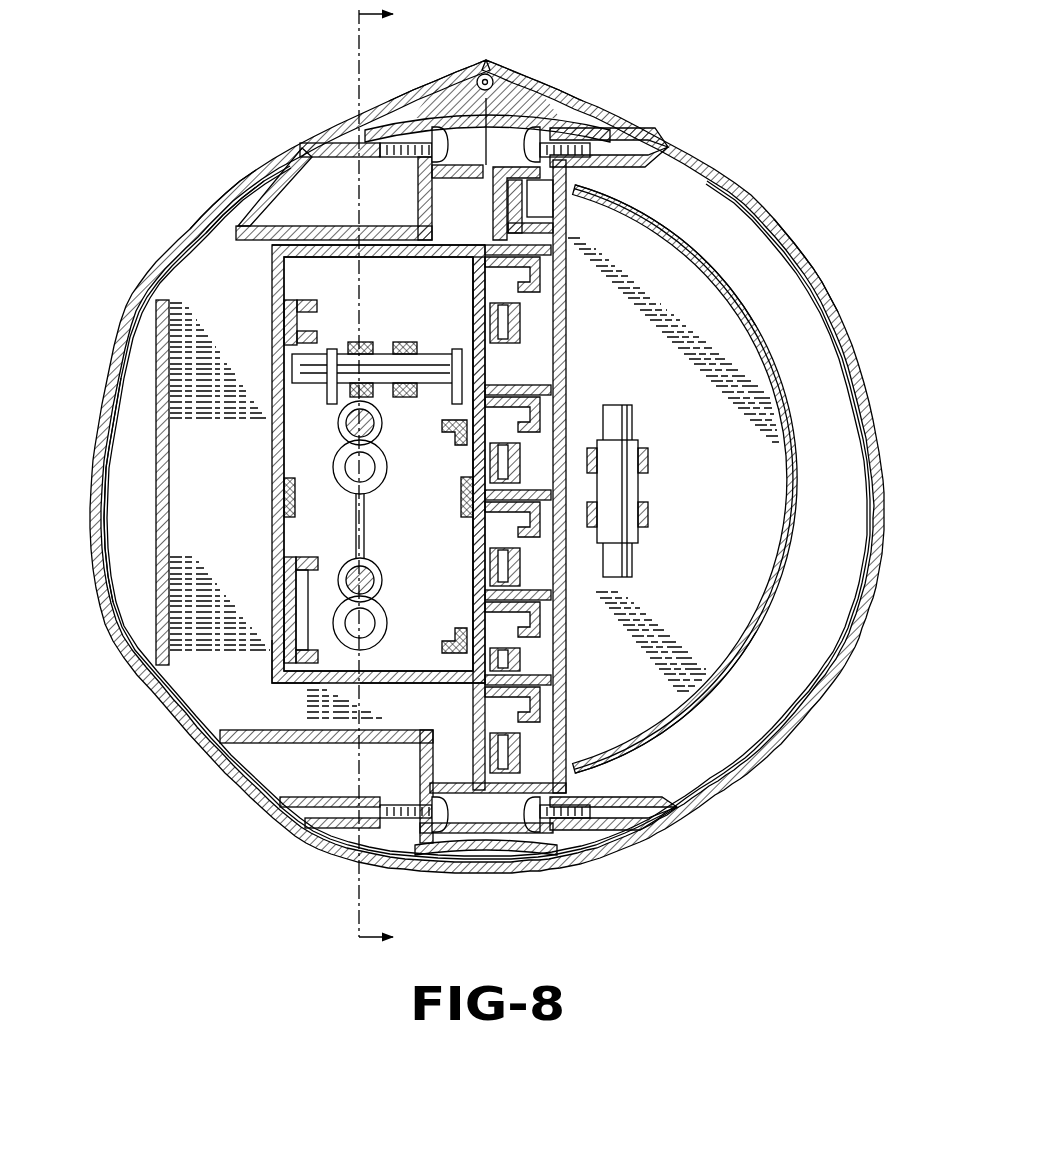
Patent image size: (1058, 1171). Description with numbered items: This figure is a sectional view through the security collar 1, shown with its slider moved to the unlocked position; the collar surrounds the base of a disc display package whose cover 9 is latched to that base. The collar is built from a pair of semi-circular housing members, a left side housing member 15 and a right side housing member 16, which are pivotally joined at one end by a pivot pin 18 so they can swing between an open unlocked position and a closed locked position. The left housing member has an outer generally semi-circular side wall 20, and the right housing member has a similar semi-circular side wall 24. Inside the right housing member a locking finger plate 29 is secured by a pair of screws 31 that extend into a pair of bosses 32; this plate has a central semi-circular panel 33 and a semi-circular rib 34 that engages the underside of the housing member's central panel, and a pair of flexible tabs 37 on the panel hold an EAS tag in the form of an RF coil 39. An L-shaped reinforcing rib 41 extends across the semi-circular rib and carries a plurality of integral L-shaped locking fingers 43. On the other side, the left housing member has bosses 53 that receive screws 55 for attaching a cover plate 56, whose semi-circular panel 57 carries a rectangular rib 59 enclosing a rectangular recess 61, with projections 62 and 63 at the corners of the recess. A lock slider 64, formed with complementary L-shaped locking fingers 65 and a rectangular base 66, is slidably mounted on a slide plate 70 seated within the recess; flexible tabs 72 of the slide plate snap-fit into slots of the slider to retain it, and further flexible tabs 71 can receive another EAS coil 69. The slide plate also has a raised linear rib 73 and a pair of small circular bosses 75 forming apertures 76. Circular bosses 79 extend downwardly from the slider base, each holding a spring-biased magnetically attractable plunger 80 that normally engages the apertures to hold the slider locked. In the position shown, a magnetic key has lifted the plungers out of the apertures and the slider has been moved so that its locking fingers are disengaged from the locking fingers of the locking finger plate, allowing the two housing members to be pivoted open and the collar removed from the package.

The security collar 1 is at (700, 104).
The cover 9 is at (387, 476).
The left side housing member 15 is at (262, 812).
The right side housing member 16 is at (754, 190).
The pivot pin 18 is at (483, 74).
The outer side wall 20 is at (220, 203).
The side wall 24 is at (813, 280).
The locking finger plate 29 is at (707, 716).
The screws 31 is at (566, 143).
The bosses 32 is at (618, 160).
The central semi-circular panel 33 is at (715, 595).
The semi-circular rib 34 is at (713, 273).
The flexible tabs 37 is at (648, 458).
The RF coil 39 is at (640, 487).
The L-shaped reinforcing rib 41 is at (566, 720).
The locking fingers 43 is at (500, 305).
The bosses 53 is at (390, 160).
The screws 55 is at (401, 143).
The cover plate 56 is at (282, 748).
The semi-circular panel 57 is at (287, 190).
The rectangular rib 59 is at (283, 223).
The rectangular recess 61 is at (414, 655).
The projection 62 is at (287, 617).
The projection 63 is at (290, 312).
The lock slider 64 is at (268, 678).
The locking fingers 65 is at (560, 300).
The rectangular base 66 is at (323, 247).
The EAS coil 69 is at (438, 356).
The slide plate 70 is at (298, 420).
The flexible tabs 71 is at (372, 340).
The flexible tabs 72 is at (291, 500).
The raised linear rib 73 is at (357, 540).
The circular bosses 75 is at (334, 455).
The apertures 76 is at (350, 468).
The circular bosses 79 is at (387, 433).
The magnetically attractable plunger 80 is at (364, 422).